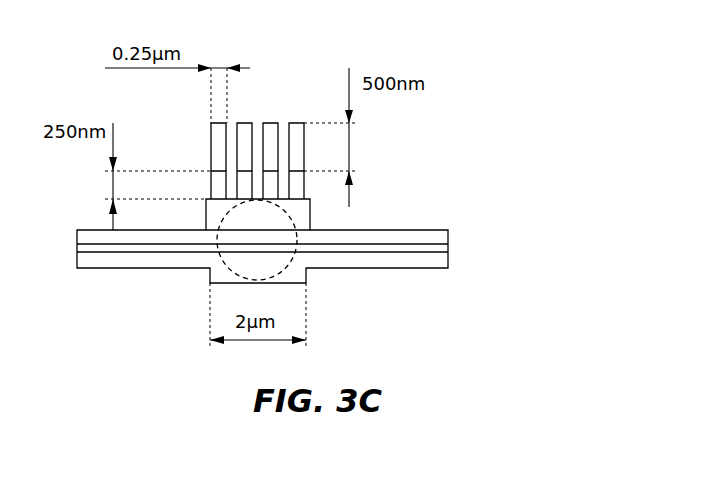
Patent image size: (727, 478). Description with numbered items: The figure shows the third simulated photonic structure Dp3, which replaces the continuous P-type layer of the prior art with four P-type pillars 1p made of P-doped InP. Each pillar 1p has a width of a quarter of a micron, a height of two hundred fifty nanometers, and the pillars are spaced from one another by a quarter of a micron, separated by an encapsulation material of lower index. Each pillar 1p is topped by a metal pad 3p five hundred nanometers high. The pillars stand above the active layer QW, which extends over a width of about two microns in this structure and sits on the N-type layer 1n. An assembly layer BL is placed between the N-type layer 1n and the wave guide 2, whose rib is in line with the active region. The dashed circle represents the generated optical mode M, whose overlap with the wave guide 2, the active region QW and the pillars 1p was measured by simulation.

The wave guide 2 is at (348, 268).
The assembly layer BL is at (450, 248).
The N-type layer 1n is at (425, 237).
The active layer QW is at (258, 214).
The optical mode M is at (211, 268).
The metal pad 3p is at (209, 131).
The P-type pillar 1p is at (209, 178).
The third structure Dp3 is at (528, 152).